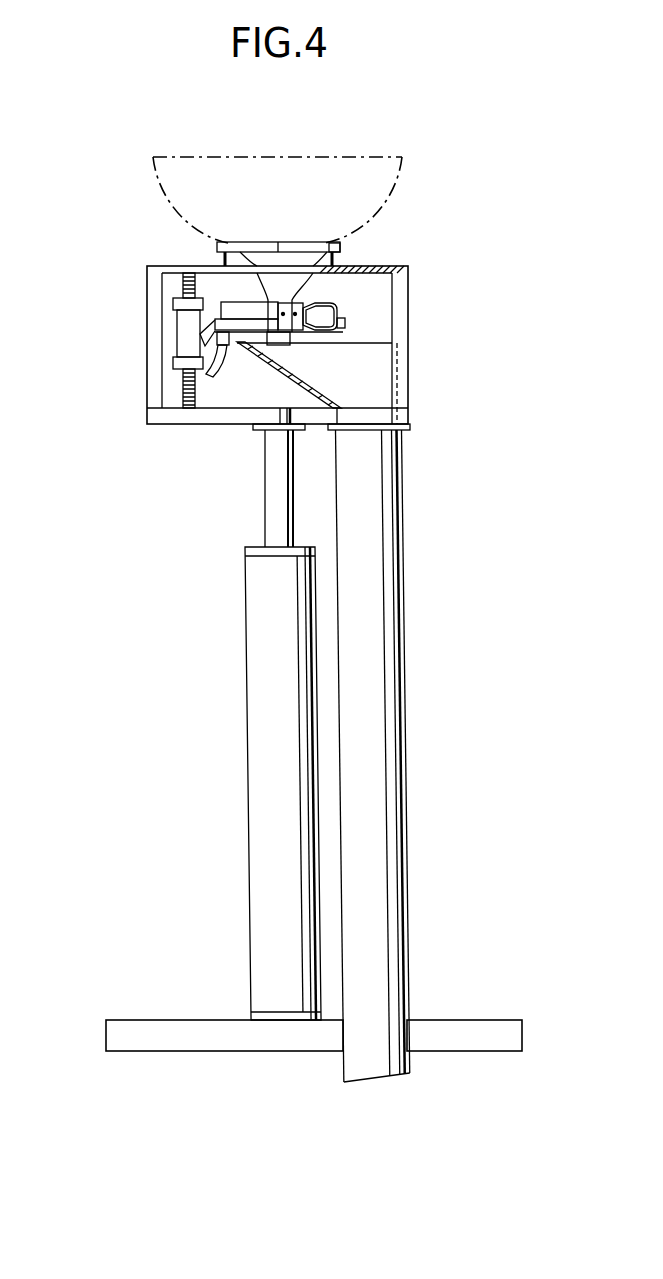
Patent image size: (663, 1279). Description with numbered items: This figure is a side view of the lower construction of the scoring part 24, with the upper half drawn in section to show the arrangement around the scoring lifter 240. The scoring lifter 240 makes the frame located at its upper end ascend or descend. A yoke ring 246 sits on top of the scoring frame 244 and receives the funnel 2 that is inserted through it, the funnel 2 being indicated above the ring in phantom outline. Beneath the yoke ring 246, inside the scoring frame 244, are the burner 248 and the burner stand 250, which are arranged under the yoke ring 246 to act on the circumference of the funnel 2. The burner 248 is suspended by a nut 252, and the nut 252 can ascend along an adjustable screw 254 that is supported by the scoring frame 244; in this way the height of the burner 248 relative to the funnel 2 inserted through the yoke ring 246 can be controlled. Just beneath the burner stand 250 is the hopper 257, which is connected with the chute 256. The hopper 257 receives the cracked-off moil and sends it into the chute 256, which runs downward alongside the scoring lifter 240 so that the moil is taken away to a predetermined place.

The funnel 2 is at (170, 182).
The scoring part 24 is at (208, 516).
The scoring lifter 240 is at (250, 759).
The scoring frame 244 is at (147, 375).
The yoke ring 246 is at (345, 247).
The burner 248 is at (340, 306).
The burner stand 250 is at (345, 327).
The nut 252 is at (173, 332).
The adjustable screw 254 is at (183, 285).
The chute 256 is at (363, 692).
The hopper 257 is at (375, 384).